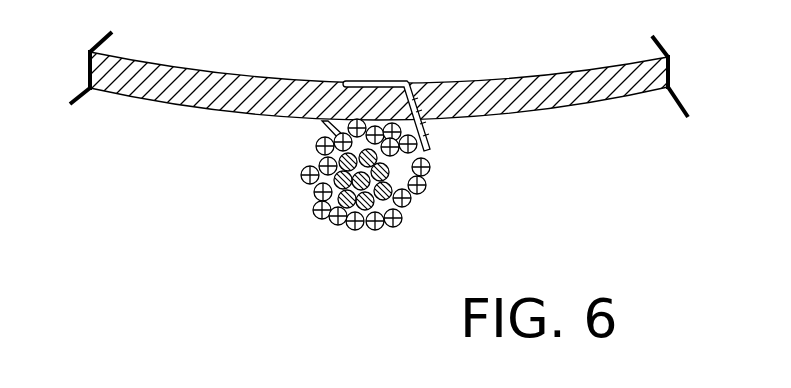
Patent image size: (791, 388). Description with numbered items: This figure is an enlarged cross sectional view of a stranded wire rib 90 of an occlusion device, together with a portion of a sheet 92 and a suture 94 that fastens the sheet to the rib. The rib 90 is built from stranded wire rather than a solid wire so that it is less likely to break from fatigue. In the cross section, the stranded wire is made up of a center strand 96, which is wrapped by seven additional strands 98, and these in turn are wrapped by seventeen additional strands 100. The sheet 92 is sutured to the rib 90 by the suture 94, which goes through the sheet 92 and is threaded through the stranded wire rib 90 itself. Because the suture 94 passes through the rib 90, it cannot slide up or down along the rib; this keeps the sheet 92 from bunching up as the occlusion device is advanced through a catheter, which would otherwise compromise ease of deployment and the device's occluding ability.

The stranded wire rib 90 is at (398, 220).
The sheet 92 is at (505, 82).
The suture 94 is at (380, 83).
The center strand 96 is at (338, 216).
The additional strands 98 is at (330, 192).
The additional strands 100 is at (313, 217).